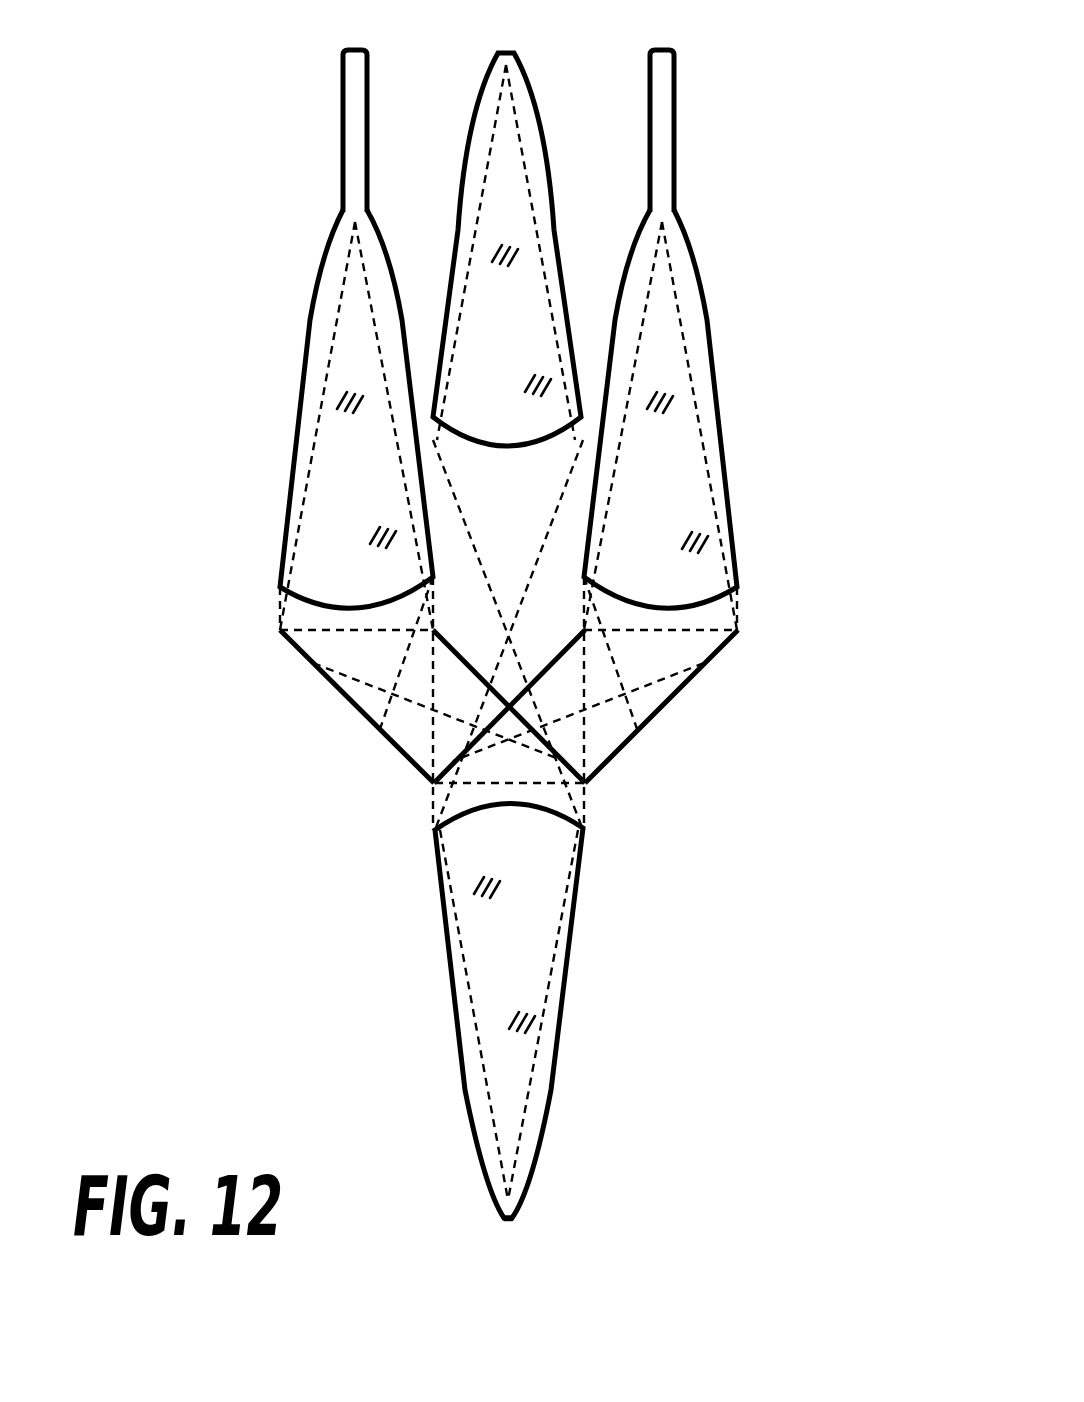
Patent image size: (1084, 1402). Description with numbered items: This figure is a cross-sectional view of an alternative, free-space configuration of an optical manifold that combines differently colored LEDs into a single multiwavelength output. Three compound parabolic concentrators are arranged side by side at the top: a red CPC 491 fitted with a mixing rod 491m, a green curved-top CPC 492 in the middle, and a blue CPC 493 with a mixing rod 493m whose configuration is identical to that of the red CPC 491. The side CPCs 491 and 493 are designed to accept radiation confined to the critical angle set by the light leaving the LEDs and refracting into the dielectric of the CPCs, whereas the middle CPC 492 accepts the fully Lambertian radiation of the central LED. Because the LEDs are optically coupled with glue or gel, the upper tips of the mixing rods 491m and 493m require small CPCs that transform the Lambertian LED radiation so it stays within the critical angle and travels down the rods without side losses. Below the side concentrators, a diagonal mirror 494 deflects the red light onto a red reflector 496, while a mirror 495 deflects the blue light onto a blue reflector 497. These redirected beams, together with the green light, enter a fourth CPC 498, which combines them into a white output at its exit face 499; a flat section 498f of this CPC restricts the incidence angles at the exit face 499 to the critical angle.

The red CPC 491 is at (298, 300).
The mixing rod 491m is at (333, 141).
The green curved-top CPC 492 is at (498, 422).
The blue CPC 493 is at (718, 335).
The mixing rod 493m is at (685, 137).
The diagonal mirror 494 is at (403, 775).
The mirror 495 is at (614, 775).
The red reflector 496 is at (451, 672).
The blue reflector 497 is at (566, 672).
The fourth CPC 498 is at (577, 1083).
The flat section 498f is at (530, 1208).
The exit face 499 is at (513, 1222).